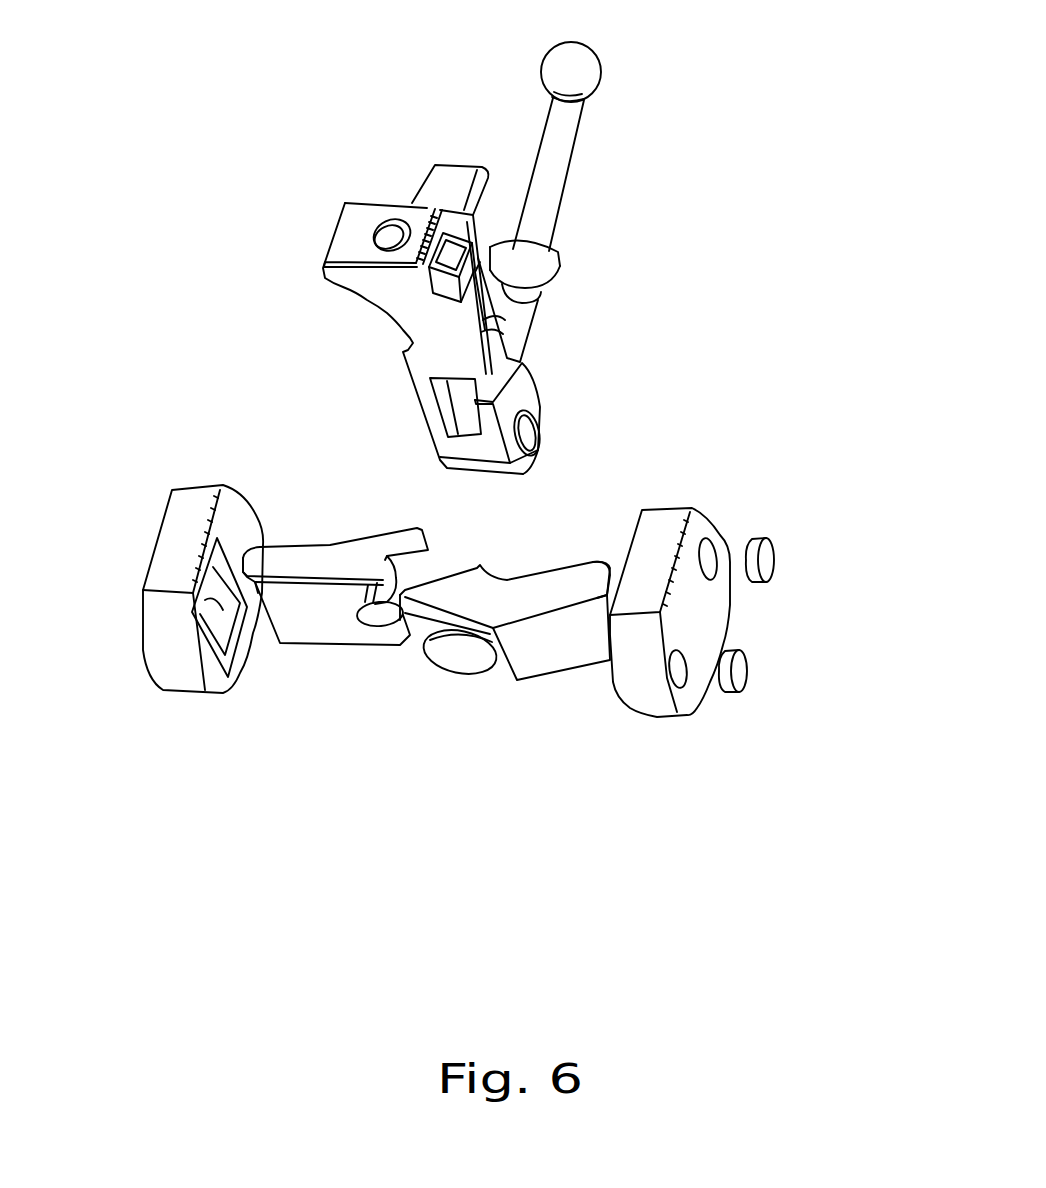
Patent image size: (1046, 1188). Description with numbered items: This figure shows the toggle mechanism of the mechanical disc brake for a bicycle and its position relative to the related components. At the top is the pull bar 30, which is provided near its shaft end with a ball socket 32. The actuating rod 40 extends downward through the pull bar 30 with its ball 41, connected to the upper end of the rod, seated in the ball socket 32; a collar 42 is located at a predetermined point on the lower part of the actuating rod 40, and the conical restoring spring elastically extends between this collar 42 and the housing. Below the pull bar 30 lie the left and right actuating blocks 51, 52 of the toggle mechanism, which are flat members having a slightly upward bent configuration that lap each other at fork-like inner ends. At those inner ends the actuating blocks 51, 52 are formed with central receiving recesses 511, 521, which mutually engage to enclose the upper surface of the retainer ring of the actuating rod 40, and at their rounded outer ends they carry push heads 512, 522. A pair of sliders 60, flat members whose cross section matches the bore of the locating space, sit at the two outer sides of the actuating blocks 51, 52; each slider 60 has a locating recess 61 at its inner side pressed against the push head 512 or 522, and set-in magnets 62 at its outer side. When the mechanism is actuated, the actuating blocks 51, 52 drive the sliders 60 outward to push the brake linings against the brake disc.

The pull bar 30 is at (448, 350).
The ball socket 32 is at (510, 360).
The actuating rod 40 is at (555, 175).
The ball 41 is at (594, 73).
The collar 42 is at (542, 266).
The left actuating block 51 is at (327, 567).
The receiving recess 511 is at (397, 615).
The push head 512 is at (258, 592).
The right actuating block 52 is at (528, 592).
The receiving recess 521 is at (480, 652).
The push head 522 is at (608, 598).
The slider 60 is at (168, 628).
The locating recess 61 is at (217, 601).
The set-in magnets 62 is at (765, 560).